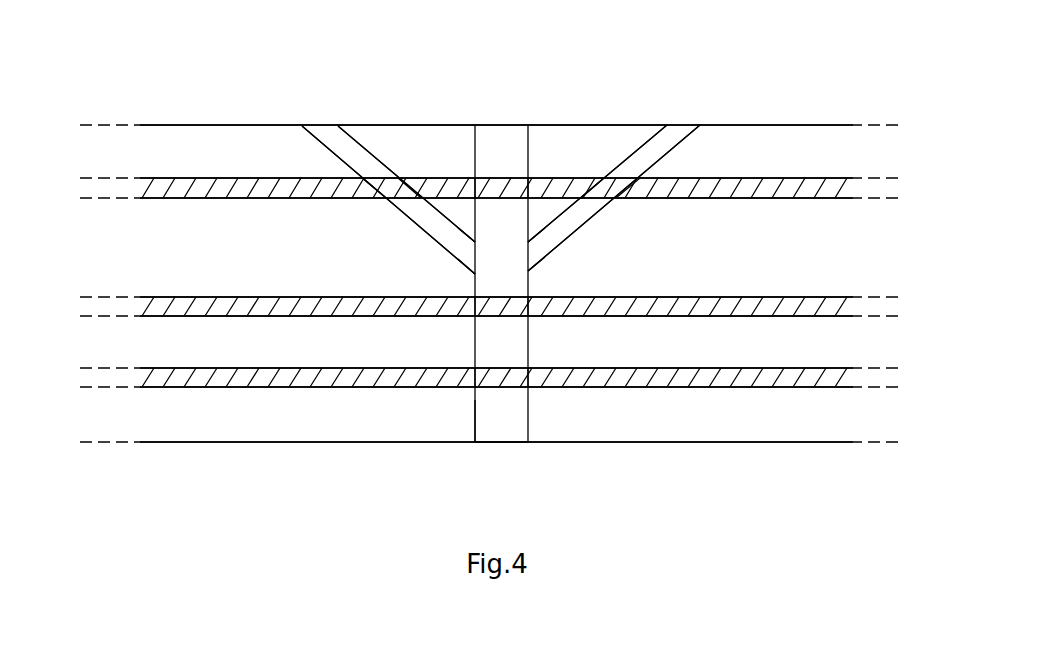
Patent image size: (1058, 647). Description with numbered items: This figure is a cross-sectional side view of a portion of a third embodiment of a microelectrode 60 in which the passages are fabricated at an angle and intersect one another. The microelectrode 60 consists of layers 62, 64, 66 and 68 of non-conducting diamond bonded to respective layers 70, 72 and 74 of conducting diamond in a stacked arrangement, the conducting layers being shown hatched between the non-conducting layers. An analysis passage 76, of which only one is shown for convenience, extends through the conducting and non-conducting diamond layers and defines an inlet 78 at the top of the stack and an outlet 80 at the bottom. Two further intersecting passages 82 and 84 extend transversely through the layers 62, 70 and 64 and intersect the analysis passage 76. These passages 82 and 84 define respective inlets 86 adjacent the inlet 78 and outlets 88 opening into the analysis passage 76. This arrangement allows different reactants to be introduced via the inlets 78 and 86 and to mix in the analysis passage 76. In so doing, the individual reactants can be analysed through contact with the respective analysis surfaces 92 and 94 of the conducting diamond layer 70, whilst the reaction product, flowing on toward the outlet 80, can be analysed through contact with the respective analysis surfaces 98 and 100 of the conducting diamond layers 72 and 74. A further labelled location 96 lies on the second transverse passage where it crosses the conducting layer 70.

The microelectrode 60 is at (701, 107).
The layer of non-conducting diamond 62 is at (843, 153).
The layer of non-conducting diamond 64 is at (835, 256).
The layer of non-conducting diamond 66 is at (845, 346).
The layer of non-conducting diamond 68 is at (848, 416).
The layer of conducting diamond 70 is at (858, 189).
The layer of conducting diamond 72 is at (860, 307).
The layer of conducting diamond 74 is at (860, 379).
The analysis passage 76 is at (482, 415).
The inlet 78 is at (497, 122).
The outlet 80 is at (502, 443).
The intersecting passage 82 is at (375, 172).
The intersecting passage 84 is at (633, 165).
The inlets 86 is at (324, 128).
The outlets 88 is at (472, 250).
The analysis surface 92 is at (400, 195).
The analysis surface 94 is at (497, 197).
The second channel opening in adhesive layer 96 is at (607, 195).
The analysis surface 98 is at (498, 310).
The analysis surface 100 is at (510, 383).